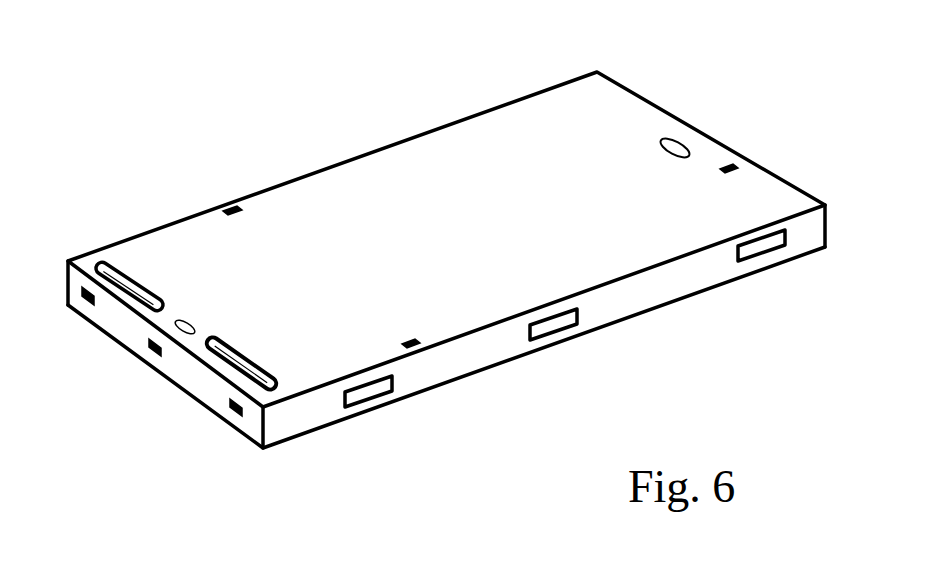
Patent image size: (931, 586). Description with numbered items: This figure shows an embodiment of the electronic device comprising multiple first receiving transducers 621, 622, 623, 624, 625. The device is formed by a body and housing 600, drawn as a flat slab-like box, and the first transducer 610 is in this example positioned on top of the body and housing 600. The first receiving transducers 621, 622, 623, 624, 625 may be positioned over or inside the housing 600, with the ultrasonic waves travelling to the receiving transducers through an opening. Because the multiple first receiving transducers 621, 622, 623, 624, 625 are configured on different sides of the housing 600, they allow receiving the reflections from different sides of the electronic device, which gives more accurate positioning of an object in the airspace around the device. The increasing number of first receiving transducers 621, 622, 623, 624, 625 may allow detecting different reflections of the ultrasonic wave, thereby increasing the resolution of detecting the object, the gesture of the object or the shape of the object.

The housing 600 is at (772, 172).
The first transducer 610 is at (724, 165).
The first receiving transducer 621 is at (224, 212).
The first receiving transducer 622 is at (418, 348).
The first receiving transducer 623 is at (84, 302).
The first receiving transducer 624 is at (160, 356).
The first receiving transducer 625 is at (236, 417).